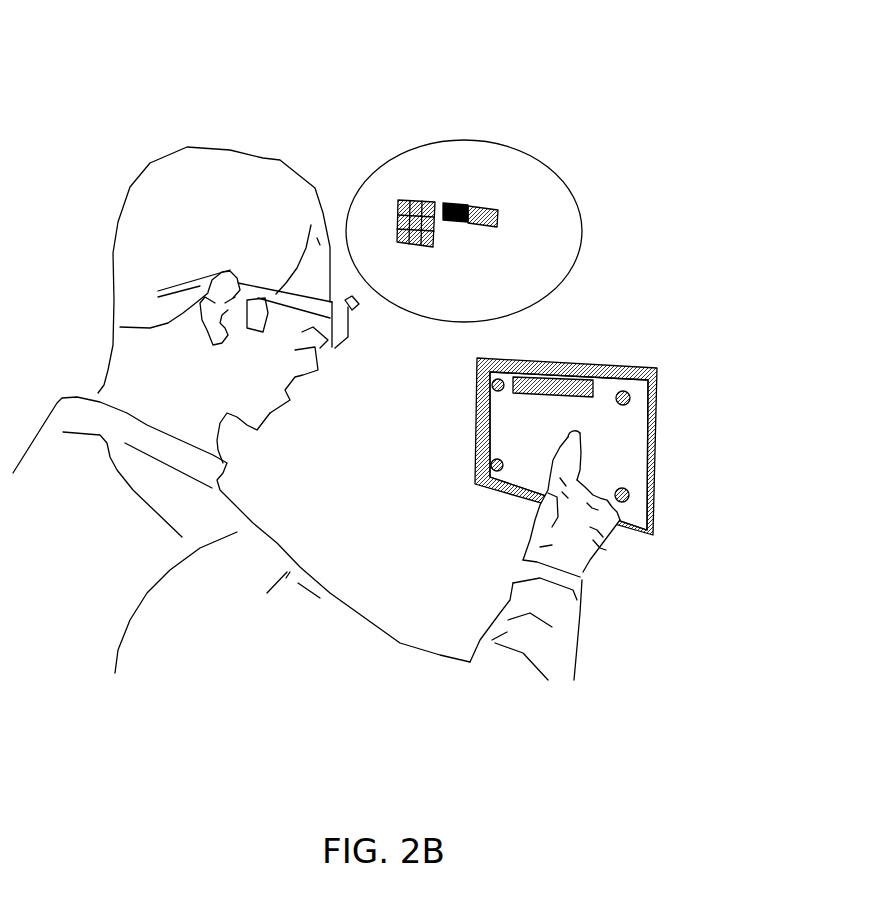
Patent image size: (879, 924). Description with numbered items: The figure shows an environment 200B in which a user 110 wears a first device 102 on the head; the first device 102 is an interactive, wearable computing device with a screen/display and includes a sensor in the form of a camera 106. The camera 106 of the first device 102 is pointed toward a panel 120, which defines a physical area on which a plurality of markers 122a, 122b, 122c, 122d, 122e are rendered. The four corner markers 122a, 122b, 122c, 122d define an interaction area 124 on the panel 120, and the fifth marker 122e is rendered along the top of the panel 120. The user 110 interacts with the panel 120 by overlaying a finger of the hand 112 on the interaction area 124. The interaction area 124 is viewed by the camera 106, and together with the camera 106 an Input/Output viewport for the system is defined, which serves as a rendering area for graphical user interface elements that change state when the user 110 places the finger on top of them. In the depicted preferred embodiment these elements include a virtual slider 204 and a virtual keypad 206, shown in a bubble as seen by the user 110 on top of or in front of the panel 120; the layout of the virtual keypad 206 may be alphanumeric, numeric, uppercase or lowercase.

The environment 200B is at (135, 49).
The user 110 is at (113, 253).
The first device 102 is at (340, 330).
The camera 106 is at (352, 308).
The panel 120 is at (543, 185).
The virtual slider 204 is at (485, 208).
The virtual keypad 206 is at (403, 217).
The interaction area 124 is at (598, 408).
The marker 122a is at (493, 387).
The marker 122b is at (493, 470).
The marker 122c is at (625, 500).
The marker 122d is at (629, 394).
The marker 122e is at (552, 383).
The hand 112 is at (573, 500).